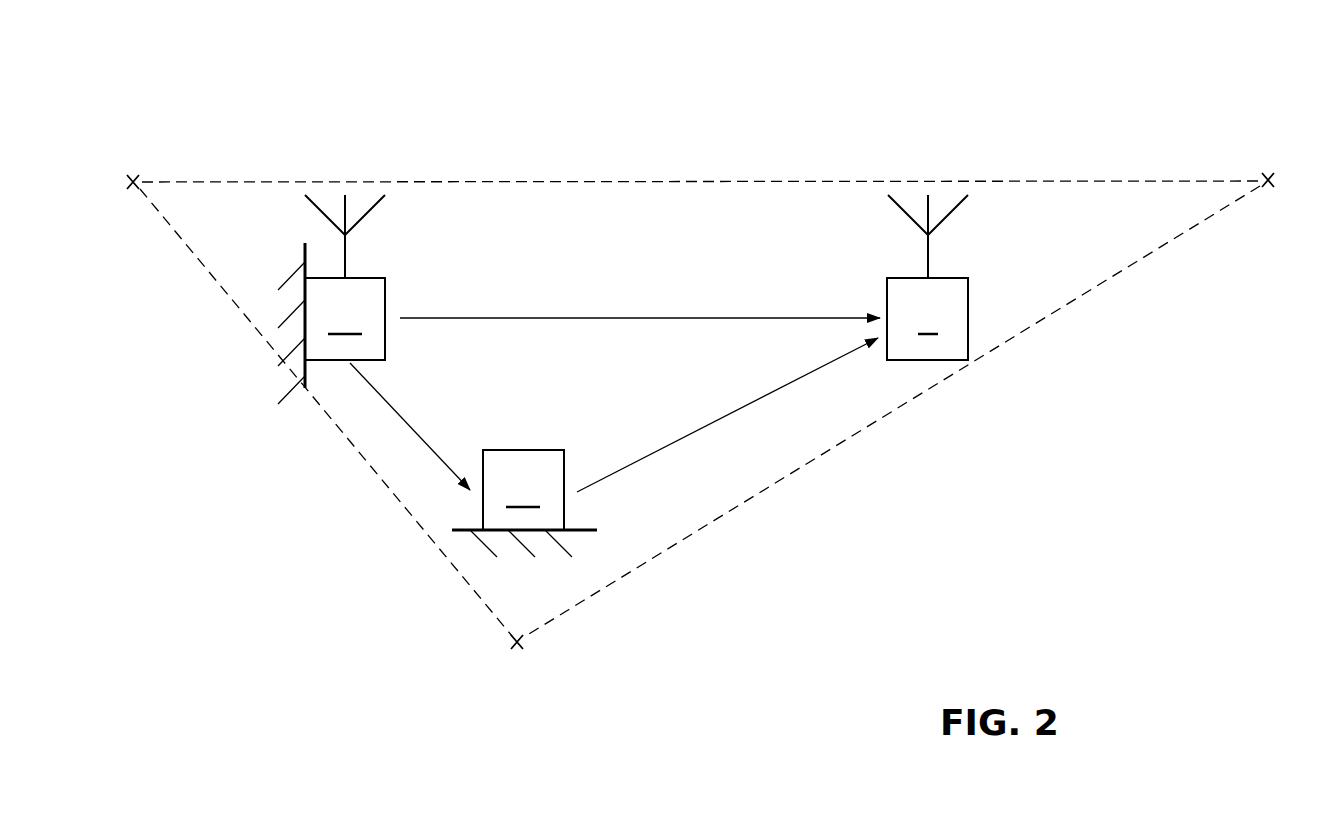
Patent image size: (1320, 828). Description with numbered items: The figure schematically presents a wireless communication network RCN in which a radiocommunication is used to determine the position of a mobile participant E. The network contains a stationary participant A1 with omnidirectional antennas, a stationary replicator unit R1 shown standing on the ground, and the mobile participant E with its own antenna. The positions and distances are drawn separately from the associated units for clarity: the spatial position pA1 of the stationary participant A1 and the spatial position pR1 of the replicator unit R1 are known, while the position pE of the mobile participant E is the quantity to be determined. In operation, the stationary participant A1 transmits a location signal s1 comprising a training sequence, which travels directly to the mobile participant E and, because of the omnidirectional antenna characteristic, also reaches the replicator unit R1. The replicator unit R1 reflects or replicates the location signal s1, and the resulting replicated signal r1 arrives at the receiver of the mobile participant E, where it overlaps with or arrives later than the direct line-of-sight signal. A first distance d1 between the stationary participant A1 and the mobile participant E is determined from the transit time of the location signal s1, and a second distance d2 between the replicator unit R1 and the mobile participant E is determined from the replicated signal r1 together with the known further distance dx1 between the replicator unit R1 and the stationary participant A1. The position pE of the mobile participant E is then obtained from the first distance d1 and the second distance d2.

The wireless communication network RCN is at (342, 98).
The stationary participant A1 is at (331, 299).
The mobile participant E is at (927, 277).
The stationary replicator unit R1 is at (524, 503).
The spatial position of the stationary participant pA1 is at (130, 165).
The position of the mobile participant pE is at (1272, 162).
The spatial position of the replicator unit pR1 is at (505, 645).
The first distance d1 is at (640, 180).
The further distance dx1 is at (340, 433).
The second distance d2 is at (880, 420).
The location signal s1 is at (565, 316).
The replicated signal r1 is at (722, 418).